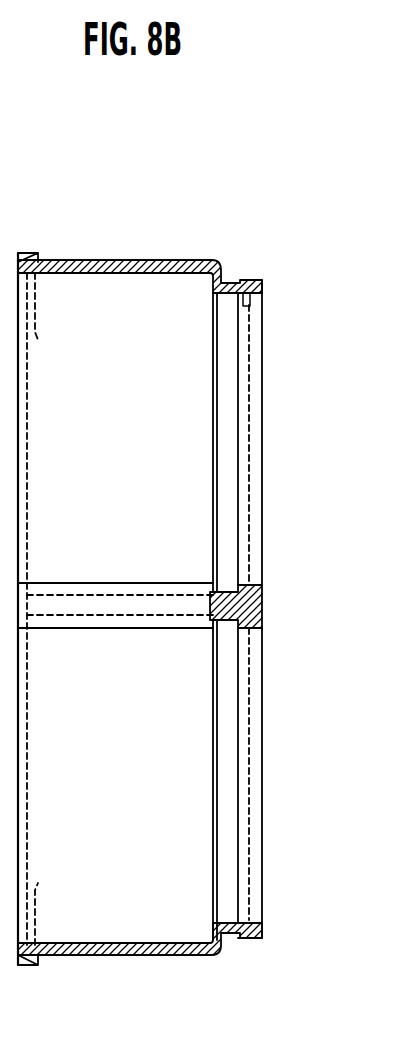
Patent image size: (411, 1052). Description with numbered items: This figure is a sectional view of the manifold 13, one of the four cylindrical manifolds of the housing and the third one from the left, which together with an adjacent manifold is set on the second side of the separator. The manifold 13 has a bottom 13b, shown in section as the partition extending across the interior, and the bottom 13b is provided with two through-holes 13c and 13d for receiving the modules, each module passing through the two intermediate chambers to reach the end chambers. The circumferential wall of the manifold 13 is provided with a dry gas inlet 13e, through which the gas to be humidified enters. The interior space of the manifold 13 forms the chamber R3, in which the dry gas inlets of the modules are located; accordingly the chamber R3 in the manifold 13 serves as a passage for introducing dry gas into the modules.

The manifold 13 is at (130, 261).
The bottom of manifold 13 13b is at (226, 592).
The through-hole 13c is at (244, 300).
The through-hole 13d is at (244, 627).
The dry gas inlet 13e is at (152, 957).
The chamber R3 is at (114, 505).